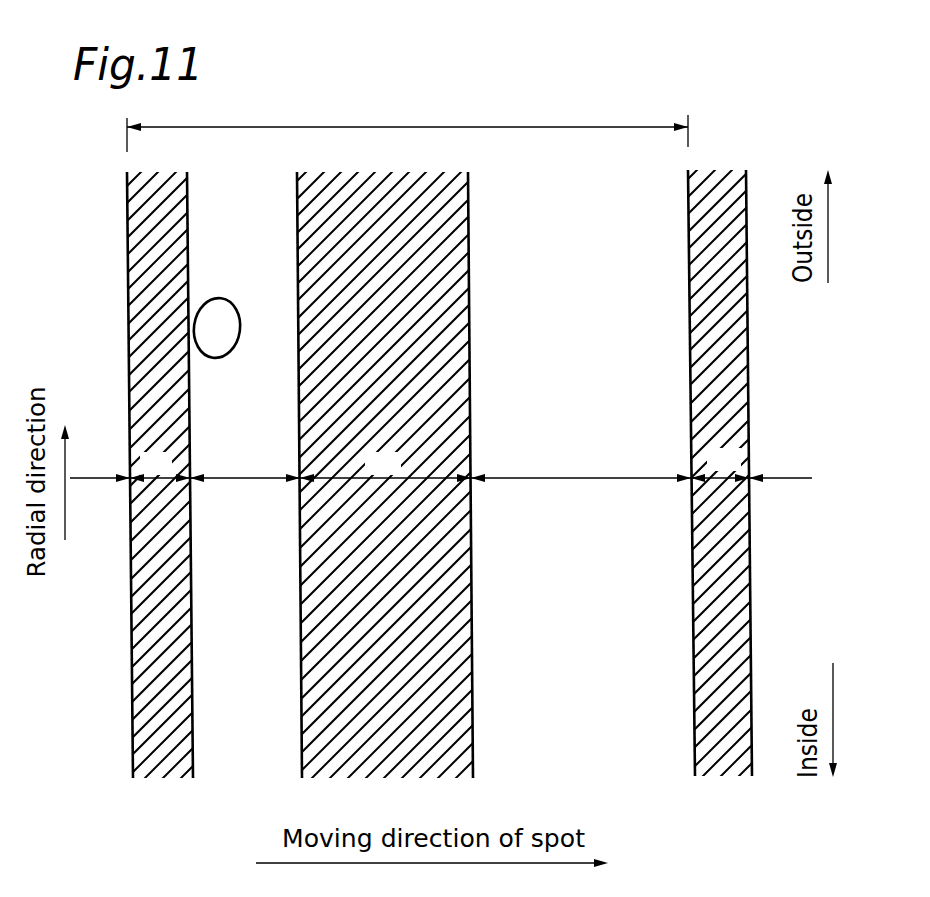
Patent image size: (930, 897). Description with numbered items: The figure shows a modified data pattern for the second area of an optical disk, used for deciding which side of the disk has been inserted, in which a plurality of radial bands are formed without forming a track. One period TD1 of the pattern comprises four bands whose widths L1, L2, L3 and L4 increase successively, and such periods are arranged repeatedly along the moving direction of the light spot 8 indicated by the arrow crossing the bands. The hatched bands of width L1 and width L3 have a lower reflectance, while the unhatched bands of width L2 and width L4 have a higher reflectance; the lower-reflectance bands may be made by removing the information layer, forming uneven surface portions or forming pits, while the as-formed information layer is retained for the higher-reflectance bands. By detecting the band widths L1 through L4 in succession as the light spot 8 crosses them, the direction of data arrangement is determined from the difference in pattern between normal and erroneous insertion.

The light spot 8 is at (219, 299).
The first band width L1 is at (439, 462).
The second band width L2 is at (501, 462).
The third band width L3 is at (385, 464).
The fourth band width L4 is at (380, 462).
The period TD1 is at (407, 123).